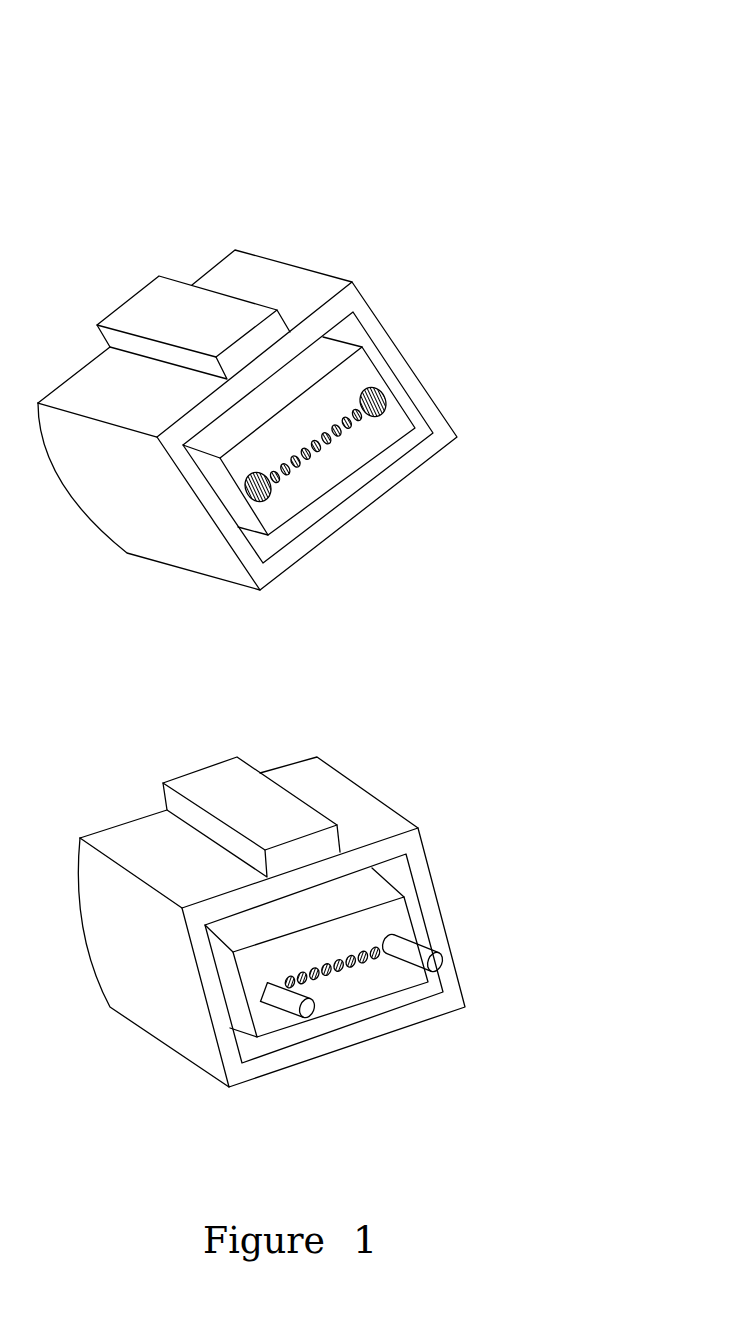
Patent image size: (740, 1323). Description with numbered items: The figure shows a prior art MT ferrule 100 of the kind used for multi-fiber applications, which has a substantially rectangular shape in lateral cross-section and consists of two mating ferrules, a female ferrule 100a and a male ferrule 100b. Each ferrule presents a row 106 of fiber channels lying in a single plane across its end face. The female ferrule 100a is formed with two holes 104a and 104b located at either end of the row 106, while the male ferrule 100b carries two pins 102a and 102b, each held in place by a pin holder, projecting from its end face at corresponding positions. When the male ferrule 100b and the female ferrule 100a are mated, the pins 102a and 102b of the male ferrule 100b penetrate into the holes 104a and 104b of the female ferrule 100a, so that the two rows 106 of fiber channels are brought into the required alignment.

The MT ferrule 100 is at (523, 65).
The female ferrule 100a is at (393, 237).
The male ferrule 100b is at (467, 800).
The pin 102a is at (308, 1015).
The pin 102b is at (440, 960).
The hole 104a is at (250, 489).
The hole 104b is at (384, 394).
The row of fiber channels 106 is at (330, 442).